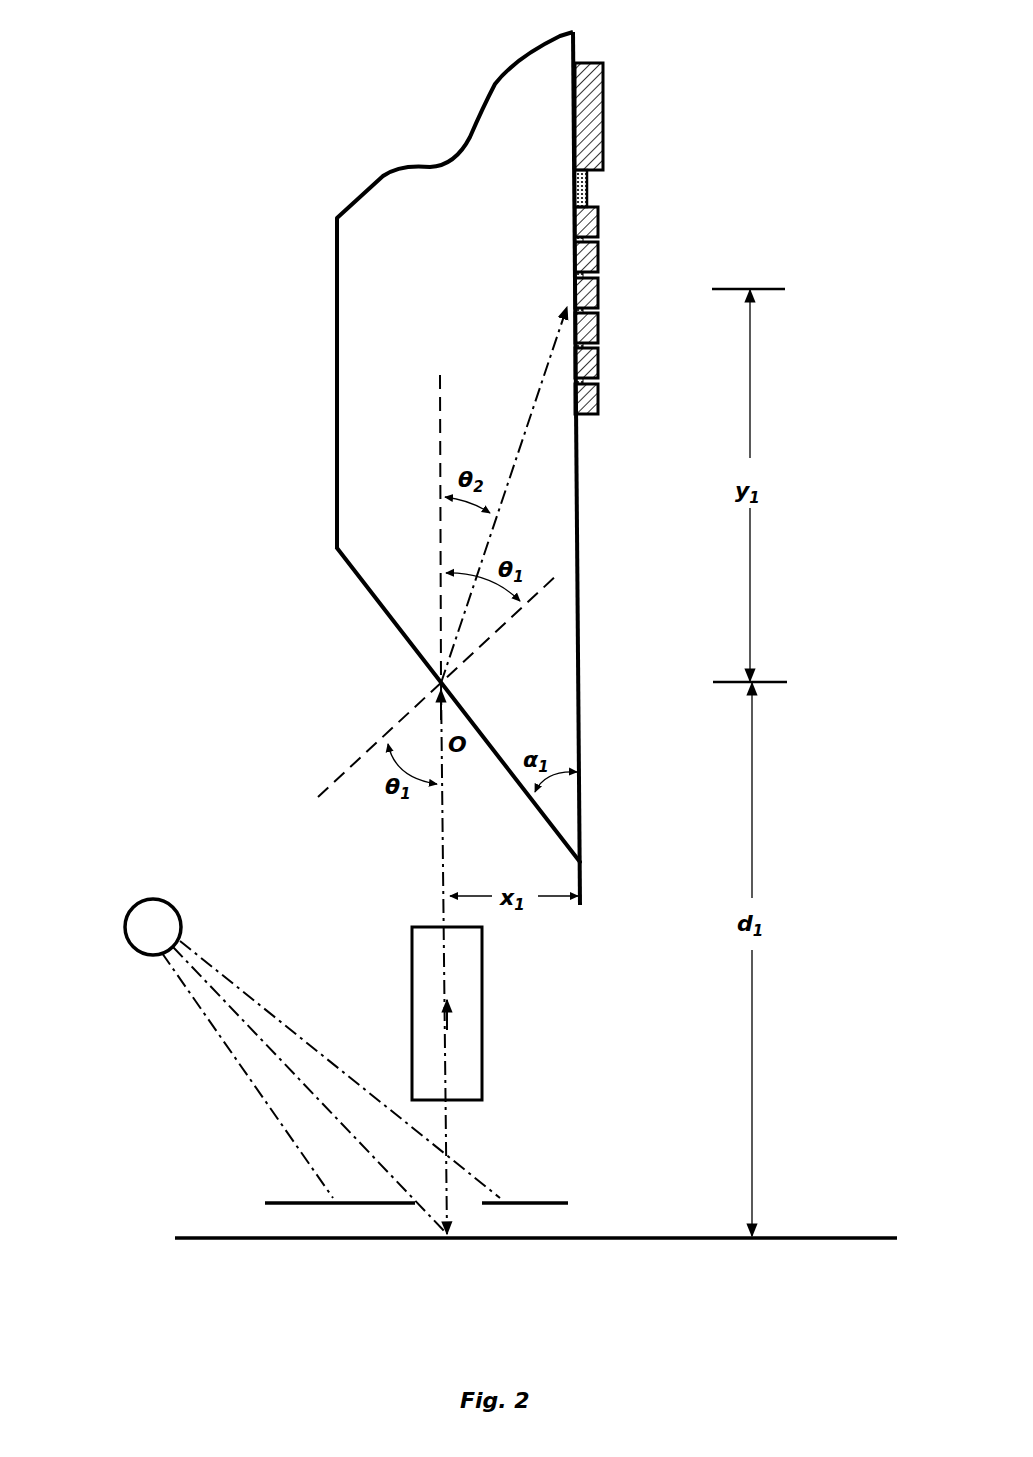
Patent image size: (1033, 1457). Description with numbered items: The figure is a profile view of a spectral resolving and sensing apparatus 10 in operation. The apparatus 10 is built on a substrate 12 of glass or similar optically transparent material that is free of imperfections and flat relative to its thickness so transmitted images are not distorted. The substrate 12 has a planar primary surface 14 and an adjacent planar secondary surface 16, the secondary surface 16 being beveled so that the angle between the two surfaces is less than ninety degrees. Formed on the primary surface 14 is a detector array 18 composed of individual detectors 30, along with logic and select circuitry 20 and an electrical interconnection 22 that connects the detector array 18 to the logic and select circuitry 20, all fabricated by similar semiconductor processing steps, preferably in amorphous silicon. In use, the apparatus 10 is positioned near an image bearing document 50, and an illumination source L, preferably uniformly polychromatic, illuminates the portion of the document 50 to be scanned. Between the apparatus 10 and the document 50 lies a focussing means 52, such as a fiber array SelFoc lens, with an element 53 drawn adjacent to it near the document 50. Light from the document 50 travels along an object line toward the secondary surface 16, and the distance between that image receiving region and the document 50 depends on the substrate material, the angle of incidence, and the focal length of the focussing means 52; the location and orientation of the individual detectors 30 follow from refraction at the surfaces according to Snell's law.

The spectral resolving apparatus 10 is at (288, 68).
The substrate 12 is at (363, 281).
The primary surface 14 is at (583, 670).
The secondary surface 16 is at (355, 586).
The detector array 18 is at (623, 218).
The logic and select circuitry 20 is at (603, 92).
The electrical interconnection 22 is at (587, 197).
The individual detectors 30 is at (598, 413).
The document 50 is at (835, 1236).
The focussing means 52 is at (482, 1000).
The aperture plate 53 is at (510, 1201).
The illumination source L is at (125, 928).